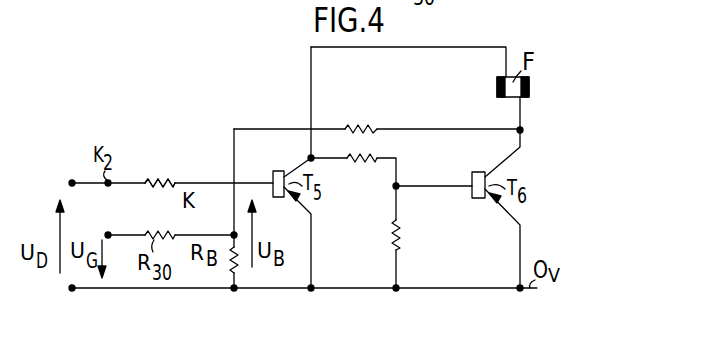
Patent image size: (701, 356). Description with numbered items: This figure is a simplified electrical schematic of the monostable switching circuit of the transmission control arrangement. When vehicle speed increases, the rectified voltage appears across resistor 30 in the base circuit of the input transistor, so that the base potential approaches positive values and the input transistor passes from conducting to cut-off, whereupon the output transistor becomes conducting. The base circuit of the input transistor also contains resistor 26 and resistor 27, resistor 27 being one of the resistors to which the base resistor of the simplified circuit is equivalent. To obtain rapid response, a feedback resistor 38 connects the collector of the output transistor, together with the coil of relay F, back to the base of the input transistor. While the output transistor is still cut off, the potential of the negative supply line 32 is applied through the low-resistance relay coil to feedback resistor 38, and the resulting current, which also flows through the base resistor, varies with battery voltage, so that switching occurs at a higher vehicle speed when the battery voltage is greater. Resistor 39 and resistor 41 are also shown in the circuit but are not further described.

The resistor 30 is at (455, 290).
The negative supply line 32 is at (437, 47).
The resistor R26 26 is at (148, 181).
The resistor 27 is at (190, 130).
The feedback resistor 38 is at (348, 128).
The resistor R39 39 is at (353, 162).
The resistor R41 41 is at (400, 232).